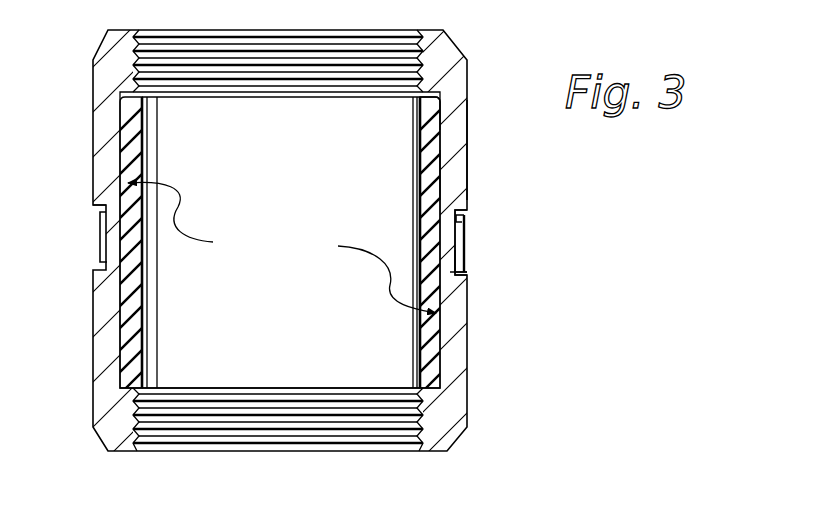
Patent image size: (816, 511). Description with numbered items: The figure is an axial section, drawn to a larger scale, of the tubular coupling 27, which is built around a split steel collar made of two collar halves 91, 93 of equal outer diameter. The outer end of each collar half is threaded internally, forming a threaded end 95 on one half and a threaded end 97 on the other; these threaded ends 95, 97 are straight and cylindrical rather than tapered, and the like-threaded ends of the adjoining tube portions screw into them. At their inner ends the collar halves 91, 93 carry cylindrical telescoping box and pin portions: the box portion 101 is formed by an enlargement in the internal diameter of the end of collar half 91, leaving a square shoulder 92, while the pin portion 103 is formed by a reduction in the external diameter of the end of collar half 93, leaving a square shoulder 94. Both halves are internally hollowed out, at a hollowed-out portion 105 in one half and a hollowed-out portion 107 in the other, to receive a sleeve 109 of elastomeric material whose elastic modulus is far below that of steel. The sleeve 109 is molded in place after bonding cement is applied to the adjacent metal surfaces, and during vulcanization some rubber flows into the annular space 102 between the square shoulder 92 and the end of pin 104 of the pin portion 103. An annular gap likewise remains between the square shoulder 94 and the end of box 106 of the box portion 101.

The tubular coupling 27 is at (570, 176).
The collar half 91 is at (460, 360).
The square shoulder 92 is at (442, 290).
The collar half 93 is at (462, 134).
The square shoulder 94 is at (466, 205).
The threaded end 95 is at (440, 430).
The threaded end 97 is at (437, 52).
The box portion 101 is at (462, 252).
The annular space 102 is at (468, 272).
The pin portion 103 is at (462, 236).
The end of pin 104 is at (444, 258).
The hollowed-out portion 105 is at (442, 336).
The end of box 106 is at (464, 219).
The hollowed-out portion 107 is at (462, 180).
The sleeve 109 is at (426, 143).